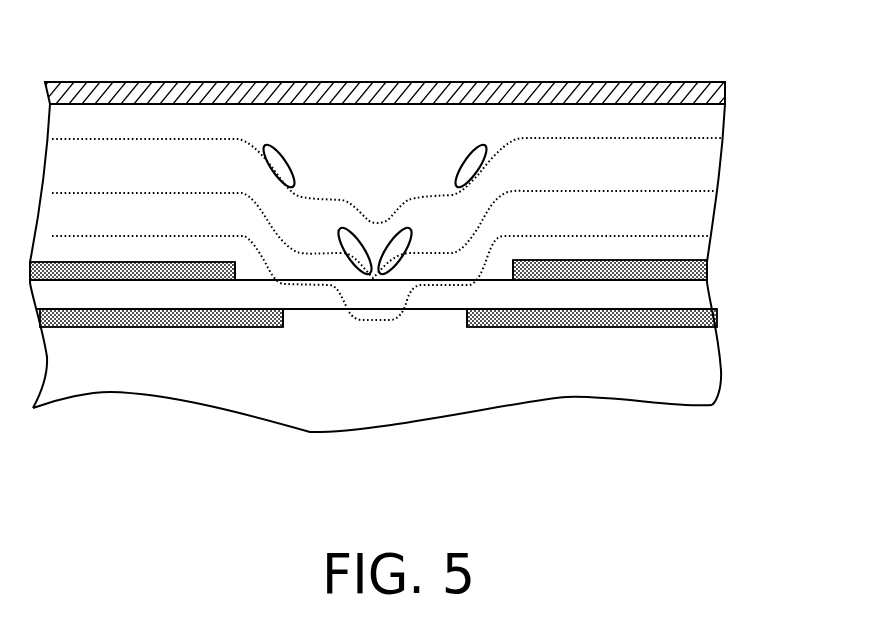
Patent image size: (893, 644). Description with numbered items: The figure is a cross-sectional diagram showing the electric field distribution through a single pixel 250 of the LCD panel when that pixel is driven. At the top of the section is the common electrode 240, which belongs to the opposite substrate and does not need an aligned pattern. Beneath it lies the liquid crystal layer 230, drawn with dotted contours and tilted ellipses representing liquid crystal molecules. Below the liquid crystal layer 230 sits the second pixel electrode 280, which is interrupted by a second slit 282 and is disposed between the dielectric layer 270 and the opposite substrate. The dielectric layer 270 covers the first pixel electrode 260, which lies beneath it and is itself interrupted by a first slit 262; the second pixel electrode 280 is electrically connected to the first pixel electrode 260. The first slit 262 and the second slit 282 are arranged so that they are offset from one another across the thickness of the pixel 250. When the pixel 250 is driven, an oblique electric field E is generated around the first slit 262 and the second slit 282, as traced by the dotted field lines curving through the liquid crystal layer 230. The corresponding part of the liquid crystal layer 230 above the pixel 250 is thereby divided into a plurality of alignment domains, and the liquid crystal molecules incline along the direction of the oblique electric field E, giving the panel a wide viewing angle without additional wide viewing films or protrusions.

The common electrode 240 is at (725, 94).
The liquid crystal layer 230 is at (748, 103).
The second pixel electrode 280 is at (707, 271).
The second slit 282 is at (250, 270).
The dielectric layer 270 is at (700, 293).
The first pixel electrode 260 is at (713, 317).
The first slit 262 is at (438, 315).
The pixel 250 is at (731, 493).
The oblique electric field E is at (478, 220).